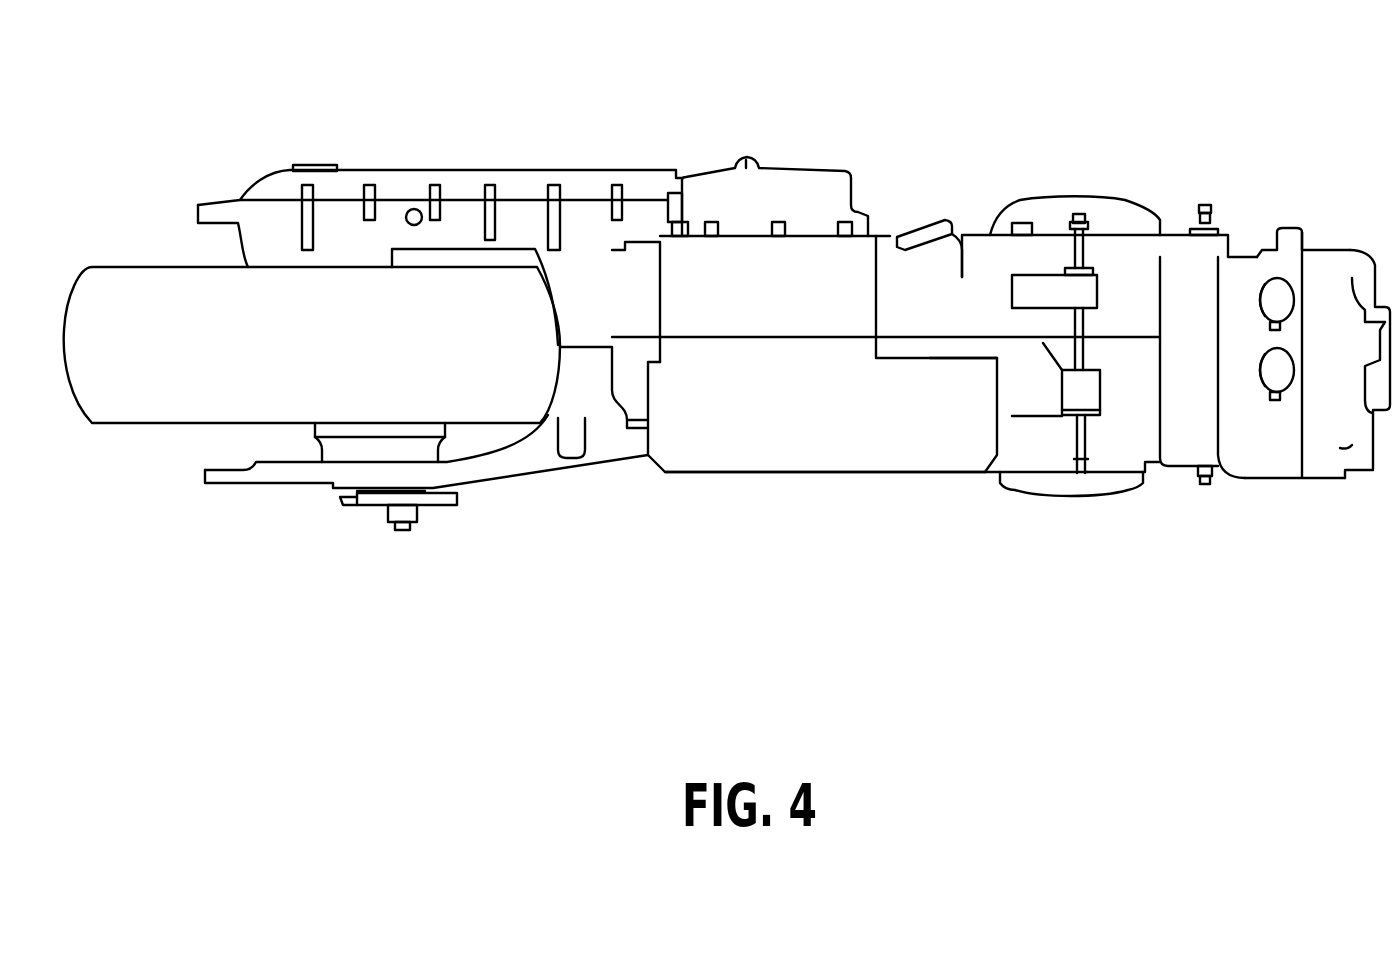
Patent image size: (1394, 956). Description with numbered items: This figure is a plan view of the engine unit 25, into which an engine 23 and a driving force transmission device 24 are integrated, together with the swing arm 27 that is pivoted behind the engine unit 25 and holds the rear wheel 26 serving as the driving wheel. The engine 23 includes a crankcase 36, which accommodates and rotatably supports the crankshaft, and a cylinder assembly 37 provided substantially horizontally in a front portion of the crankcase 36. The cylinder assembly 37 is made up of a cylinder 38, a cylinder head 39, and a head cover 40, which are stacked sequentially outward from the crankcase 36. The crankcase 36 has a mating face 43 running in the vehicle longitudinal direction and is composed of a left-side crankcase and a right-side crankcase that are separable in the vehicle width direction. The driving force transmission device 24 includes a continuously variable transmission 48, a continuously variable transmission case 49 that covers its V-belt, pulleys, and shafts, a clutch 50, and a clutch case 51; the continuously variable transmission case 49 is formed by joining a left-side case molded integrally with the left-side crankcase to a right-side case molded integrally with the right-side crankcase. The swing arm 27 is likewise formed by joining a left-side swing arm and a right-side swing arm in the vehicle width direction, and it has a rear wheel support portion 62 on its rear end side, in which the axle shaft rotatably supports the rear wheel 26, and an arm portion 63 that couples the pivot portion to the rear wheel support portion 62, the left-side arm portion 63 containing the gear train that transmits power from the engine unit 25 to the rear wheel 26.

The engine 23 is at (1205, 448).
The driving force transmission device 24 is at (770, 483).
The engine unit 25 is at (908, 518).
The rear wheel 26 is at (125, 408).
The swing arm 27 is at (460, 188).
The crankcase 36 is at (1025, 255).
The cylinder assembly 37 is at (1275, 421).
The cylinder 38 is at (1185, 445).
The cylinder head 39 is at (1255, 445).
The head cover 40 is at (1350, 418).
The mating face 43 is at (930, 337).
The continuously variable transmission 48 is at (712, 438).
The continuously variable transmission case 49 is at (855, 275).
The clutch 50 is at (712, 186).
The clutch case 51 is at (775, 186).
The rear wheel support portion 62 is at (278, 190).
The arm portion 63 is at (523, 188).